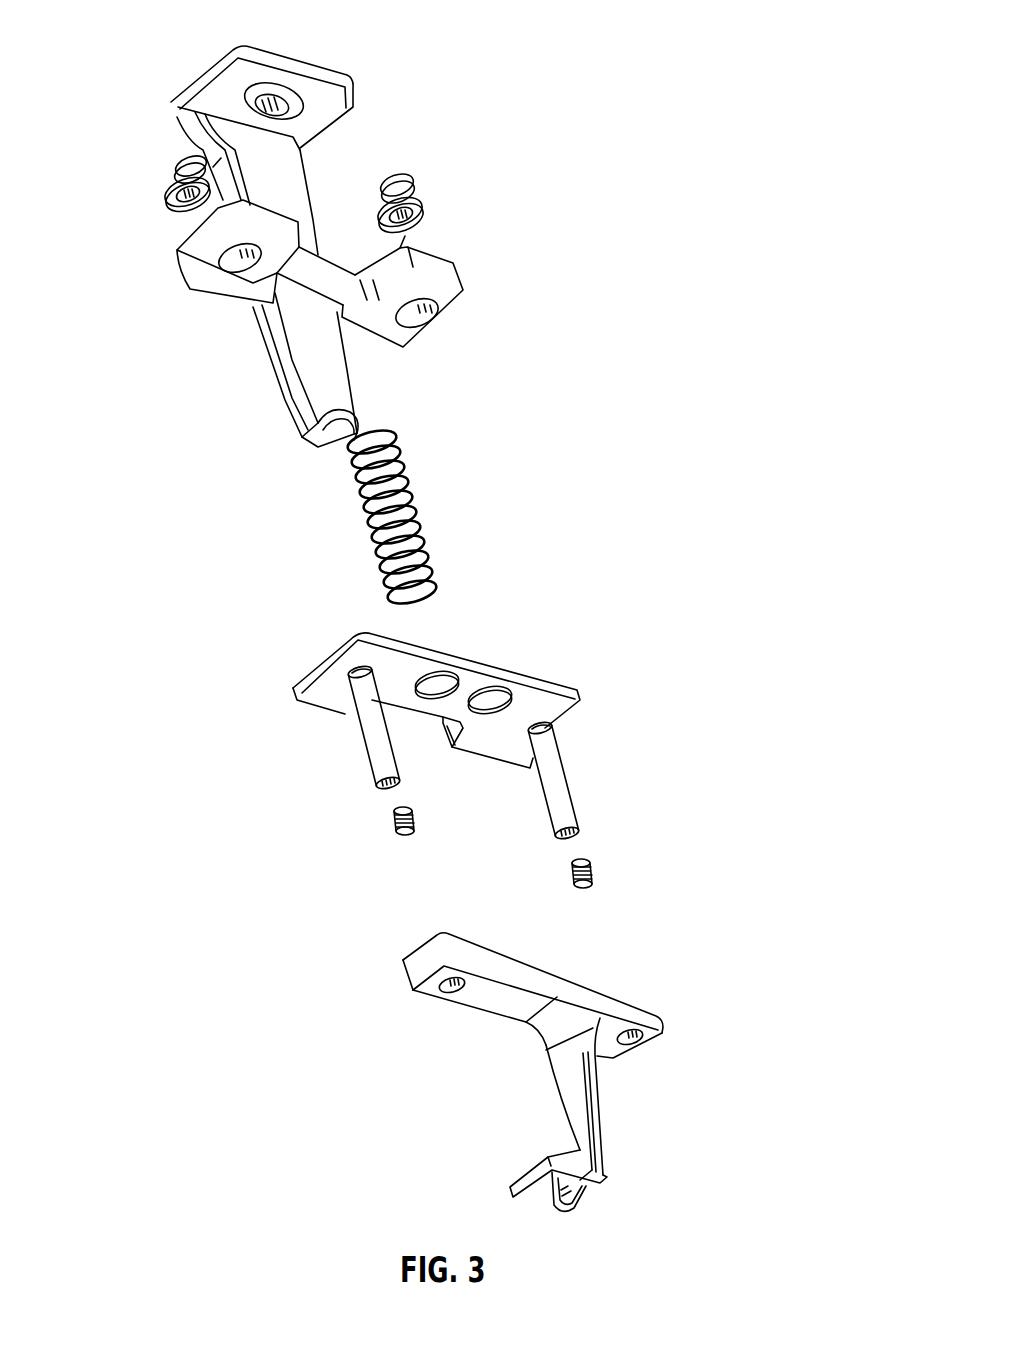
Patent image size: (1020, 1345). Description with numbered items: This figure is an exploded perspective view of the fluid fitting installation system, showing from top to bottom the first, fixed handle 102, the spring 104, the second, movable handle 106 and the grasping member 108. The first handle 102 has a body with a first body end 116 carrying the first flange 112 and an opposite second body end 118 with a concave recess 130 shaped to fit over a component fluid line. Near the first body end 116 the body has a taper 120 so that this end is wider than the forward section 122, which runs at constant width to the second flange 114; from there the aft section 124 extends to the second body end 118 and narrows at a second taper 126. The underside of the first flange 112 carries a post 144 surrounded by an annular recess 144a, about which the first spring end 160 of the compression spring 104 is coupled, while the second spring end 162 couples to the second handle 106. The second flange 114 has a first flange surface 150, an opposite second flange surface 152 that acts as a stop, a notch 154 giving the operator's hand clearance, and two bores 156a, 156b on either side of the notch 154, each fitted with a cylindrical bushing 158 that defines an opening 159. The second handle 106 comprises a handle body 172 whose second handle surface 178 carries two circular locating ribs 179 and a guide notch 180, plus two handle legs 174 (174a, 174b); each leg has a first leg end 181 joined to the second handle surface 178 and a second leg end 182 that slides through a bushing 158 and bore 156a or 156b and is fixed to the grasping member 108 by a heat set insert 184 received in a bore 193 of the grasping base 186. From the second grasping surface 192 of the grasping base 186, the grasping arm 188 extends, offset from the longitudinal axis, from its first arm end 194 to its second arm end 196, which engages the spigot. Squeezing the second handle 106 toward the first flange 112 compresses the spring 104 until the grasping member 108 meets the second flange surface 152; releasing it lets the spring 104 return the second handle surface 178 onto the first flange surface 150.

The first handle 102 is at (588, 212).
The spring 104 is at (444, 505).
The second handle 106 is at (754, 757).
The grasping member 108 is at (771, 1062).
The first flange 112 is at (168, 60).
The second flange 114 is at (467, 276).
The first body end 116 is at (353, 100).
The second body end 118 is at (360, 423).
The taper 120 is at (192, 127).
The forward section 122 is at (290, 213).
The aft section 124 is at (333, 393).
The second taper 126 is at (270, 357).
The recess 130 is at (327, 440).
The post 144 is at (297, 122).
The annular recess 144a is at (317, 87).
The first flange surface 150 is at (417, 267).
The second flange surface 152 is at (410, 347).
The notch 154 is at (415, 225).
The bore 156a is at (227, 265).
The bore 156b is at (437, 313).
The bushing 158 is at (160, 172).
The opening 159 is at (180, 203).
The first spring end 160 is at (397, 443).
The second spring end 162 is at (440, 587).
The handle body 172 is at (595, 668).
The handle leg 174 is at (664, 740).
The handle leg 174a is at (364, 752).
The handle leg 174b is at (599, 788).
The second handle surface 178 is at (515, 753).
The locating ribs 179 is at (480, 683).
The guide notch 180 is at (423, 715).
The first leg end 181 is at (345, 713).
The second leg end 182 is at (387, 787).
The heat set insert 184 is at (395, 832).
The grasping base 186 is at (674, 1003).
The grasping arm 188 is at (628, 1127).
The second grasping surface 192 is at (467, 1000).
The bores 193 is at (443, 988).
The first arm end 194 is at (562, 1020).
The second arm end 196 is at (607, 1168).